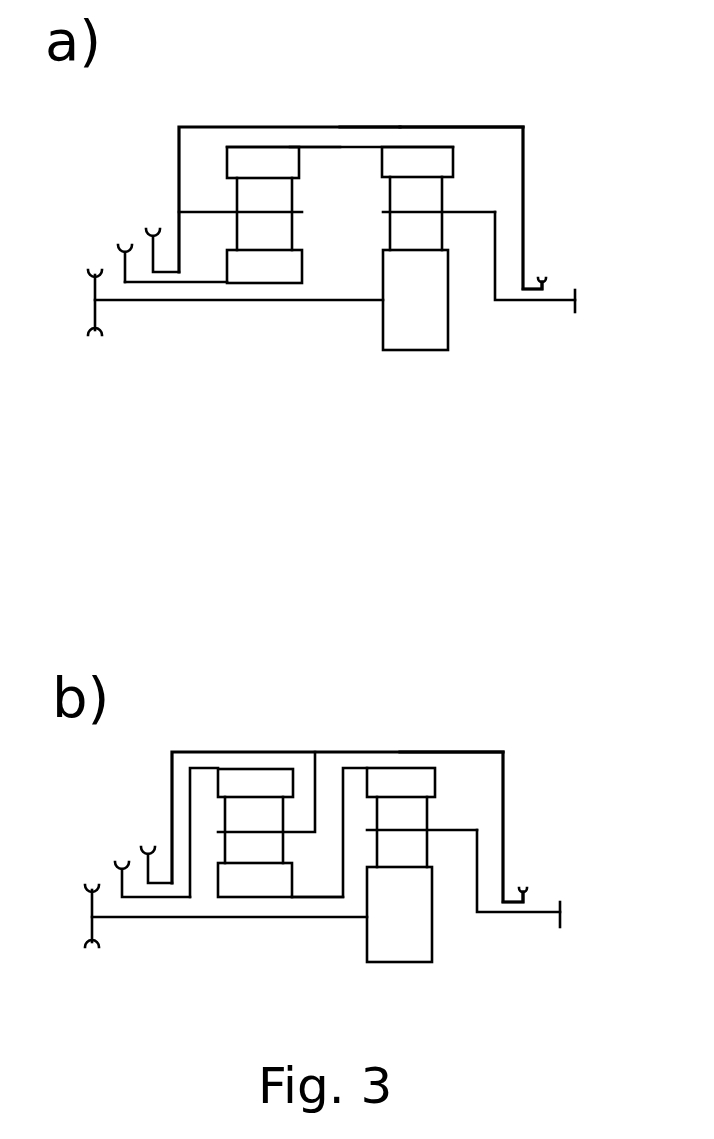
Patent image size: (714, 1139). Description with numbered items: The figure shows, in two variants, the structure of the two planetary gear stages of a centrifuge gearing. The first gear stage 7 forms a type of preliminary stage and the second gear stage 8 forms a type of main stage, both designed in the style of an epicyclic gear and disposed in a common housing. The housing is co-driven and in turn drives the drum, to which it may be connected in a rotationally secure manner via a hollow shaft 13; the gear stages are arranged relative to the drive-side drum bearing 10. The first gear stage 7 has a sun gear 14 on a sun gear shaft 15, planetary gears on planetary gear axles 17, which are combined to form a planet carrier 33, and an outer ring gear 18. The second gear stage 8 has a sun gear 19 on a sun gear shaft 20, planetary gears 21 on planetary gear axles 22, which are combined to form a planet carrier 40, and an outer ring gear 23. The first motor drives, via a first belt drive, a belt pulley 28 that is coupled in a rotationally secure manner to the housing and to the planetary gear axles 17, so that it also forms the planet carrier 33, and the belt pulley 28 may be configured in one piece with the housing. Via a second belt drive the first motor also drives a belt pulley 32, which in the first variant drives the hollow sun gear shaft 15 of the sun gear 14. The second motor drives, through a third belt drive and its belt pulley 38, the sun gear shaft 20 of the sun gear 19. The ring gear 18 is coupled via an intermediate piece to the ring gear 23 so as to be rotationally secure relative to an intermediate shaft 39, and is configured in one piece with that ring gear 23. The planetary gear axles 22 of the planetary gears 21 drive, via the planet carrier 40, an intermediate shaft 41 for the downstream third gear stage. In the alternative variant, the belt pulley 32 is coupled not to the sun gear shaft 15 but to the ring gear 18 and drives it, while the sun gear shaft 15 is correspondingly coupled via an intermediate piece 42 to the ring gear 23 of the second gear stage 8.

In FIG. 3a, the first gear stage 7 is at (261, 140).
In FIG. 3b, the first gear stage 7 is at (230, 760).
In FIG. 3a, the second gear stage 8 is at (442, 134).
In FIG. 3b, the second gear stage 8 is at (446, 764).
In FIG. 3a, the drive-side drum bearing 10 is at (336, 132).
In FIG. 3b, the drive-side drum bearing 10 is at (349, 827).
In FIG. 3a, the hollow shaft 13 is at (362, 127).
In FIG. 3a, the sun gear 14 is at (280, 273).
In FIG. 3b, the sun gear 14 is at (272, 898).
In FIG. 3a, the sun gear shaft 15 is at (223, 285).
In FIG. 3b, the sun gear shaft 15 is at (325, 898).
In FIG. 3a, the planetary gear axles 17 is at (198, 212).
In FIG. 3b, the planetary gear axles 17 is at (300, 832).
In FIG. 3a, the outer ring gear 18 is at (240, 160).
In FIG. 3b, the outer ring gear 18 is at (257, 768).
In FIG. 3a, the sun gear 19 is at (437, 337).
In FIG. 3b, the sun gear 19 is at (397, 945).
In FIG. 3a, the sun gear shaft 20 is at (172, 305).
In FIG. 3b, the sun gear shaft 20 is at (163, 918).
In FIG. 3a, the planetary gears 21 is at (432, 195).
In FIG. 3a, the planetary gear axles 22 is at (514, 166).
In FIG. 3b, the planetary gear axles 22 is at (443, 830).
In FIG. 3a, the outer ring gear 23 is at (417, 147).
In FIG. 3b, the outer ring gear 23 is at (407, 768).
In FIG. 3a, the belt pulley 28 is at (135, 185).
In FIG. 3b, the belt pulley 28 is at (140, 853).
In FIG. 3a, the belt pulley 32 is at (118, 242).
In FIG. 3b, the belt pulley 32 is at (115, 870).
In FIG. 3a, the planet carrier 33 is at (535, 287).
In FIG. 3b, the planet carrier 33 is at (567, 855).
In FIG. 3a, the belt pulley 38 is at (95, 295).
In FIG. 3b, the belt pulley 38 is at (86, 927).
In FIG. 3a, the intermediate shaft 39 is at (310, 147).
In FIG. 3a, the planet carrier 40 is at (522, 330).
In FIG. 3b, the planet carrier 40 is at (477, 840).
In FIG. 3a, the intermediate shaft 41 is at (560, 302).
In FIG. 3b, the intermediate shaft 41 is at (542, 912).
In FIG. 3b, the intermediate piece 42 is at (343, 797).